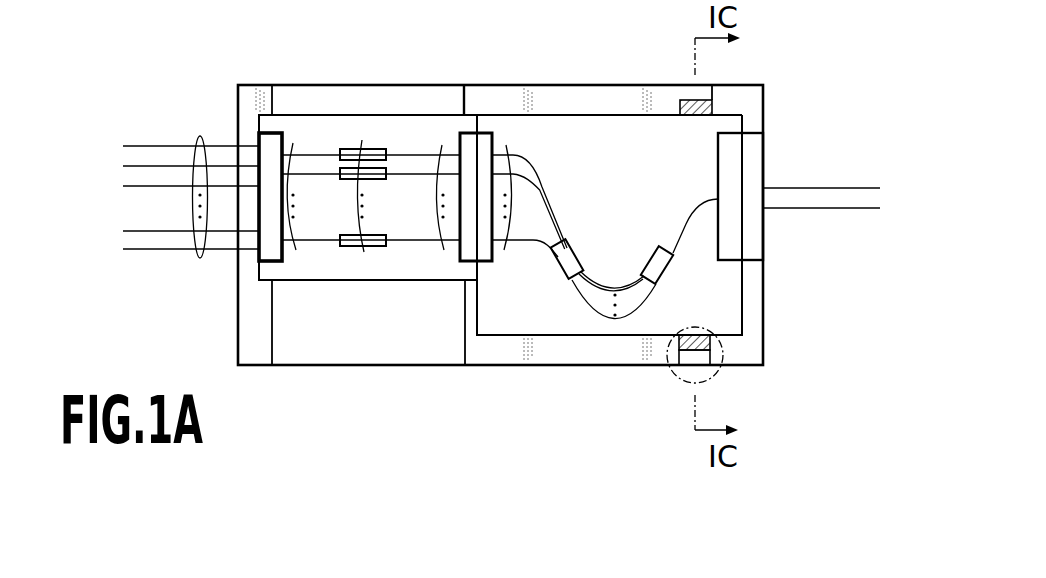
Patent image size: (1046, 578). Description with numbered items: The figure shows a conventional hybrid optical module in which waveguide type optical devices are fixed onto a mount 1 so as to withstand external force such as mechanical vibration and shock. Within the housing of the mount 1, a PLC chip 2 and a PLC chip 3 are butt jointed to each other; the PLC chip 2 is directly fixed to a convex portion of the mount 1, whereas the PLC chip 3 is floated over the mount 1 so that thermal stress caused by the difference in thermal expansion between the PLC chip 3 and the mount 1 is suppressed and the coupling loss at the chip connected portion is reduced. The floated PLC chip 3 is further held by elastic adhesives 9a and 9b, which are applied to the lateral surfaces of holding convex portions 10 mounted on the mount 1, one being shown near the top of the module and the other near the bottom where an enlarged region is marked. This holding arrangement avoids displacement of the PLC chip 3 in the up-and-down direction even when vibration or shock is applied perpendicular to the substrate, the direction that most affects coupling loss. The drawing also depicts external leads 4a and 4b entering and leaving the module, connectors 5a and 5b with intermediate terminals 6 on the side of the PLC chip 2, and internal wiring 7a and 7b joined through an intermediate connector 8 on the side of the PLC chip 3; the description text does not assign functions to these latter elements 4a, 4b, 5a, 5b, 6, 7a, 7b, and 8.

The mount 1 is at (492, 366).
The PLC chip 2 is at (365, 115).
The PLC chip 3 is at (585, 115).
The first cable 4a is at (205, 143).
The second cable 4b is at (817, 188).
The first connector 5a is at (293, 143).
The second connector 5b is at (442, 145).
The relay terminals 6 is at (362, 252).
The first wires 7a is at (506, 145).
The second wire 7b is at (685, 218).
The intermediate connector 8 is at (563, 263).
The elastic adhesive 9a is at (688, 100).
The elastic adhesive 9b is at (700, 335).
The holding convex portion 10 is at (675, 380).